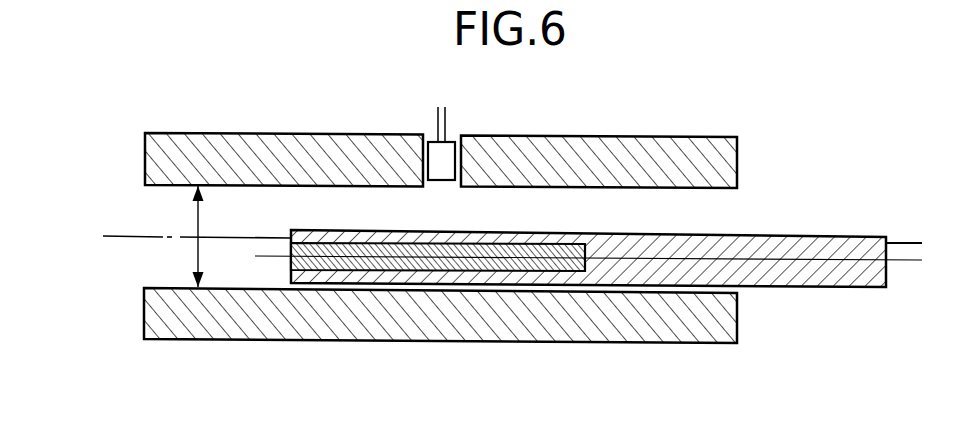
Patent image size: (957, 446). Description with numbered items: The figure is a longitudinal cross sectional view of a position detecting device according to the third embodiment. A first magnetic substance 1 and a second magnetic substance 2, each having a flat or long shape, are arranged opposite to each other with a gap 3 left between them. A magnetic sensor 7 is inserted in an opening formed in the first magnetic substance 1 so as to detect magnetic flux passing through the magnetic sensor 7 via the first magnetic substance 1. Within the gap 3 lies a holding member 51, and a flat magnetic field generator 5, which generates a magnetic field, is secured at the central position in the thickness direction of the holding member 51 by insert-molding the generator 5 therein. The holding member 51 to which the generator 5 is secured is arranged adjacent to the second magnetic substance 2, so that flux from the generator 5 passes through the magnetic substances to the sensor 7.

The first magnetic substance 1 is at (325, 133).
The second magnetic substance 2 is at (655, 344).
The gap 3 is at (197, 211).
The magnetic field generator 5 is at (357, 262).
The magnetic sensor 7 is at (445, 147).
The holding member 51 is at (823, 288).